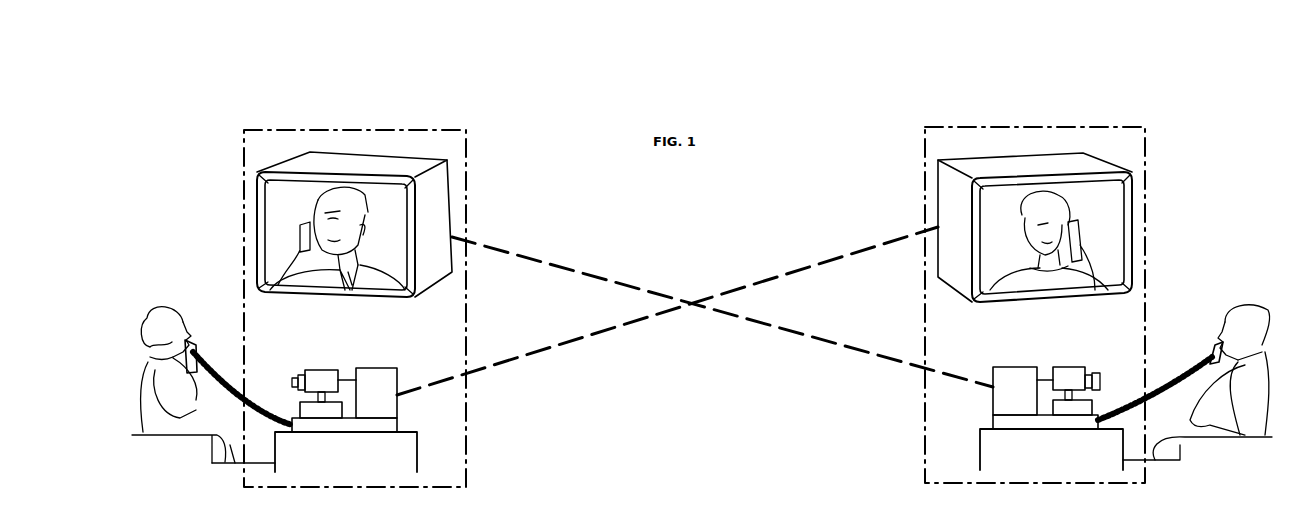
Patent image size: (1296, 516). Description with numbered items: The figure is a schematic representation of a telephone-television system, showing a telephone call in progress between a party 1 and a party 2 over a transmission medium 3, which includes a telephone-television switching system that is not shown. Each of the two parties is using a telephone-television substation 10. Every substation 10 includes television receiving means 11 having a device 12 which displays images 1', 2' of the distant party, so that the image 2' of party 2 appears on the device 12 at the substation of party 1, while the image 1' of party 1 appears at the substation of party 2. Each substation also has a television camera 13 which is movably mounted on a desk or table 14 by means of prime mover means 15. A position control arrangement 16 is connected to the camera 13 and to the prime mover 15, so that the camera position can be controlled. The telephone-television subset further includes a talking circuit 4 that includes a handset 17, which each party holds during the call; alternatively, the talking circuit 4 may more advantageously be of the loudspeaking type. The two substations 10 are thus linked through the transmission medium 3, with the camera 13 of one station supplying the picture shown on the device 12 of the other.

The party 1 is at (183, 375).
The party 2 is at (1212, 372).
The image 1' is at (1049, 252).
The image 2' is at (337, 256).
The transmission medium 3 is at (702, 284).
The talking circuit 4 is at (385, 425).
The telephone-television substation 10 is at (353, 120).
The television receiving means 11 is at (422, 153).
The device 12 is at (282, 190).
The television camera 13 is at (325, 372).
The desk or table 14 is at (418, 462).
The prime mover means 15 is at (318, 410).
The position control arrangement 16 is at (385, 373).
The handset 17 is at (190, 342).